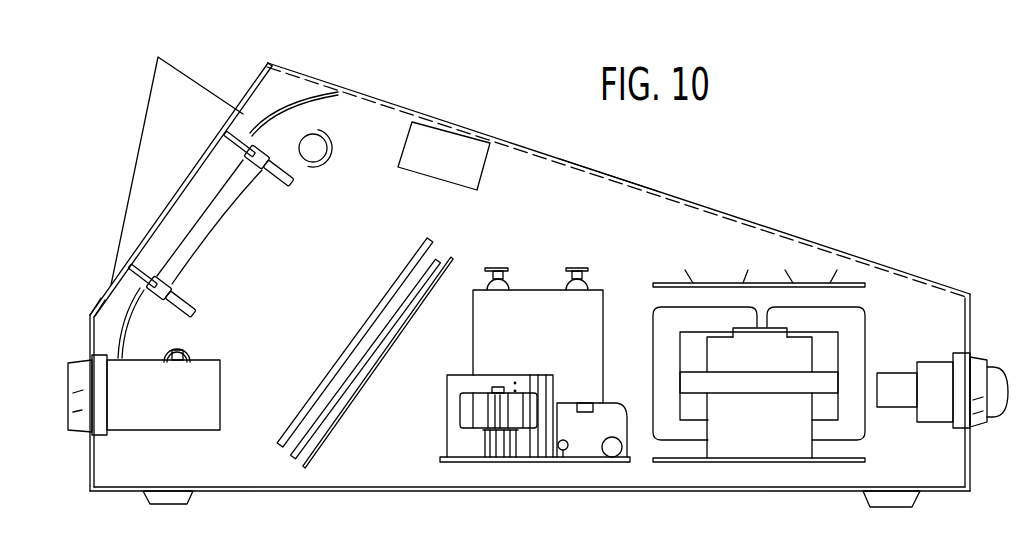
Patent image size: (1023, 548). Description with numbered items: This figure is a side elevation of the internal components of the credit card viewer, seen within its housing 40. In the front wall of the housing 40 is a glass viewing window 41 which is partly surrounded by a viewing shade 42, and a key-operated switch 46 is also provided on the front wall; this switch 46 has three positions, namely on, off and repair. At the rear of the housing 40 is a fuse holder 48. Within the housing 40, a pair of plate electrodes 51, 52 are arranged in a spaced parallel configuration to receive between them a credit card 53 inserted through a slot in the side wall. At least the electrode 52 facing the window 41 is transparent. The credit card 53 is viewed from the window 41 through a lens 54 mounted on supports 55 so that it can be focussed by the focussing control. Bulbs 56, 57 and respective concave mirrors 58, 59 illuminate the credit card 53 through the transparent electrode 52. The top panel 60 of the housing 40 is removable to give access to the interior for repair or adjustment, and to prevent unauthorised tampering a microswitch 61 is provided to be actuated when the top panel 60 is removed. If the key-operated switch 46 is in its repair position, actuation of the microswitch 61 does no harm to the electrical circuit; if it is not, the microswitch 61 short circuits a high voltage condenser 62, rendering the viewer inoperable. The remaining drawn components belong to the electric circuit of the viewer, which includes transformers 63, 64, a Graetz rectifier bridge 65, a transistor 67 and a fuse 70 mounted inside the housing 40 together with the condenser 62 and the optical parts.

The housing 40 is at (680, 188).
The glass viewing window 41 is at (140, 243).
The viewing shade 42 is at (192, 87).
The key-operated switch 46 is at (80, 421).
The fuse holder 48 is at (975, 425).
The plate electrode 51 is at (381, 362).
The plate electrode 52 is at (419, 249).
The credit card 53 is at (291, 458).
The lens 54 is at (191, 236).
The supports 55 is at (291, 185).
The bulb 56 is at (331, 154).
The bulb 57 is at (191, 353).
The concave mirror 58 is at (304, 95).
The concave mirror 59 is at (101, 297).
The top panel 60 is at (607, 176).
The microswitch 61 is at (483, 142).
The high voltage condenser 62 is at (568, 346).
The transformer 63 is at (787, 420).
The transformer 64 is at (527, 449).
The Graetz rectifier bridge 65 is at (566, 417).
The transistor 67 is at (479, 422).
The fuse 70 is at (612, 458).